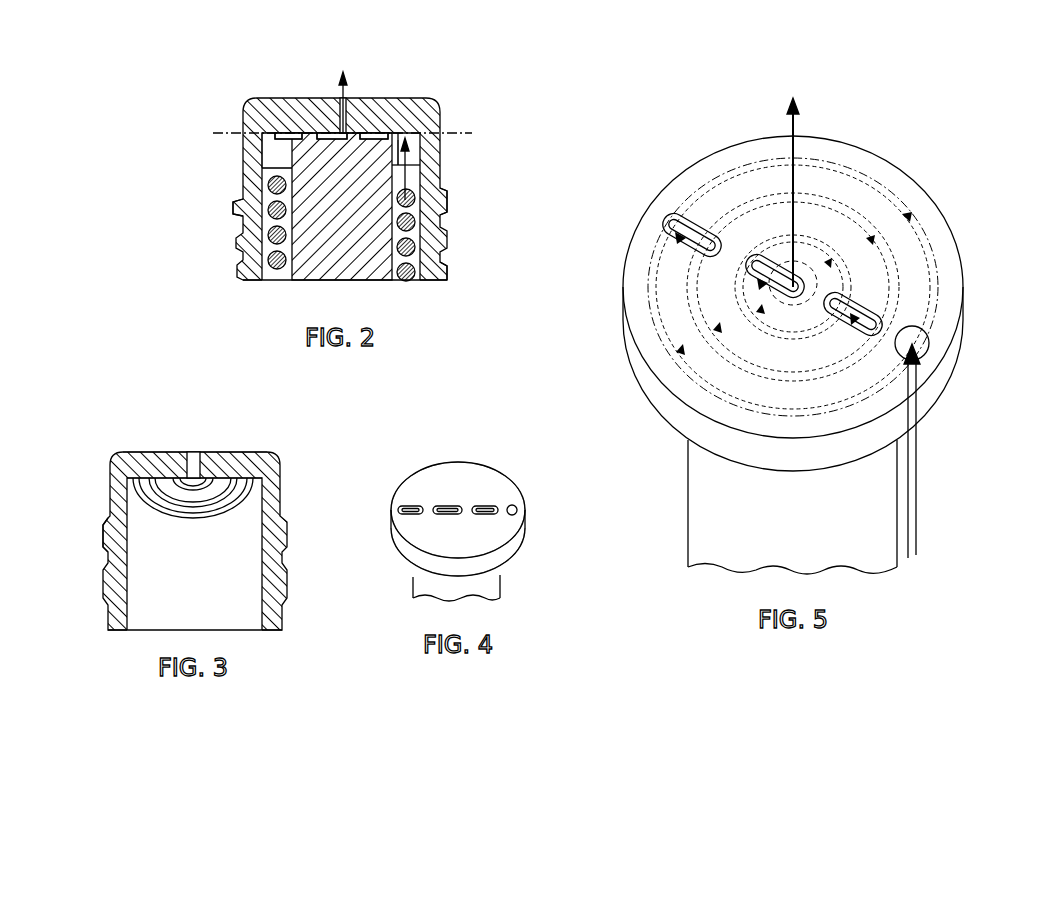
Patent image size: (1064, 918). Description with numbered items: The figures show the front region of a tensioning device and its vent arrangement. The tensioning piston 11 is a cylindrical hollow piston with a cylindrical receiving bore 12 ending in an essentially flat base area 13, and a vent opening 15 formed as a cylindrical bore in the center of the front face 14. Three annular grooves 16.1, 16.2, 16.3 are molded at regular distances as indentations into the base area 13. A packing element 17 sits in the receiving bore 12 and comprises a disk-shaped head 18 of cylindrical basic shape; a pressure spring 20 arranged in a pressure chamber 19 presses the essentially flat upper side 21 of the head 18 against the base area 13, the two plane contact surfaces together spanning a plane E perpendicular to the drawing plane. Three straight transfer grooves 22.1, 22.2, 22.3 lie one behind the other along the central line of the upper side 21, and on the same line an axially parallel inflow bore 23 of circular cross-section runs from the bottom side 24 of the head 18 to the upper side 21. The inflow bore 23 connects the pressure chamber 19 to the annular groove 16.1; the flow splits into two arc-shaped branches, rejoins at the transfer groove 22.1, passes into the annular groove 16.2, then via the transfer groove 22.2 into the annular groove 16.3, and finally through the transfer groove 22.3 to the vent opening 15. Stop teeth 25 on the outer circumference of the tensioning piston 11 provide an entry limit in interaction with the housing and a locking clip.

In FIG. 2, the tensioning piston 11 is at (238, 166).
In FIG. 3, the tensioning piston 11 is at (286, 466).
In FIG. 2, the receiving bore 12 is at (240, 240).
In FIG. 2, the base area 13 is at (248, 138).
In FIG. 3, the base area 13 is at (150, 514).
In FIG. 2, the front face 14 is at (350, 103).
In FIG. 3, the front face 14 is at (248, 460).
In FIG. 2, the vent opening 15 is at (346, 92).
In FIG. 3, the vent opening 15 is at (203, 460).
In FIG. 5, the vent opening 15 is at (793, 226).
In FIG. 2, the annular groove 16.1 is at (285, 131).
In FIG. 3, the annular groove 16.1 is at (140, 482).
In FIG. 5, the annular groove 16.1 is at (935, 268).
In FIG. 2, the annular groove 16.2 is at (330, 131).
In FIG. 3, the annular groove 16.2 is at (178, 488).
In FIG. 5, the annular groove 16.2 is at (823, 200).
In FIG. 2, the annular groove 16.3 is at (375, 131).
In FIG. 3, the annular groove 16.3 is at (194, 470).
In FIG. 5, the annular groove 16.3 is at (835, 238).
In FIG. 2, the packing element 17 is at (447, 233).
In FIG. 4, the packing element 17 is at (400, 584).
In FIG. 2, the head 18 is at (262, 176).
In FIG. 4, the head 18 is at (393, 528).
In FIG. 5, the head 18 is at (793, 355).
In FIG. 2, the pressure chamber 19 is at (447, 197).
In FIG. 2, the pressure spring 20 is at (447, 268).
In FIG. 2, the upper side 21 is at (341, 206).
In FIG. 4, the upper side 21 is at (463, 468).
In FIG. 2, the transfer groove 22.1 is at (290, 142).
In FIG. 4, the transfer groove 22.1 is at (405, 503).
In FIG. 5, the transfer groove 22.1 is at (668, 216).
In FIG. 2, the transfer groove 22.2 is at (398, 131).
In FIG. 4, the transfer groove 22.2 is at (490, 503).
In FIG. 5, the transfer groove 22.2 is at (870, 303).
In FIG. 2, the transfer groove 22.3 is at (335, 142).
In FIG. 4, the transfer groove 22.3 is at (447, 503).
In FIG. 5, the transfer groove 22.3 is at (760, 262).
In FIG. 2, the inflow bore 23 is at (438, 122).
In FIG. 4, the inflow bore 23 is at (519, 508).
In FIG. 5, the inflow bore 23 is at (930, 340).
In FIG. 2, the bottom side 24 is at (234, 206).
In FIG. 4, the bottom side 24 is at (515, 560).
In FIG. 3, the stop teeth 25 is at (100, 588).
In FIG. 2, the plane E is at (220, 128).